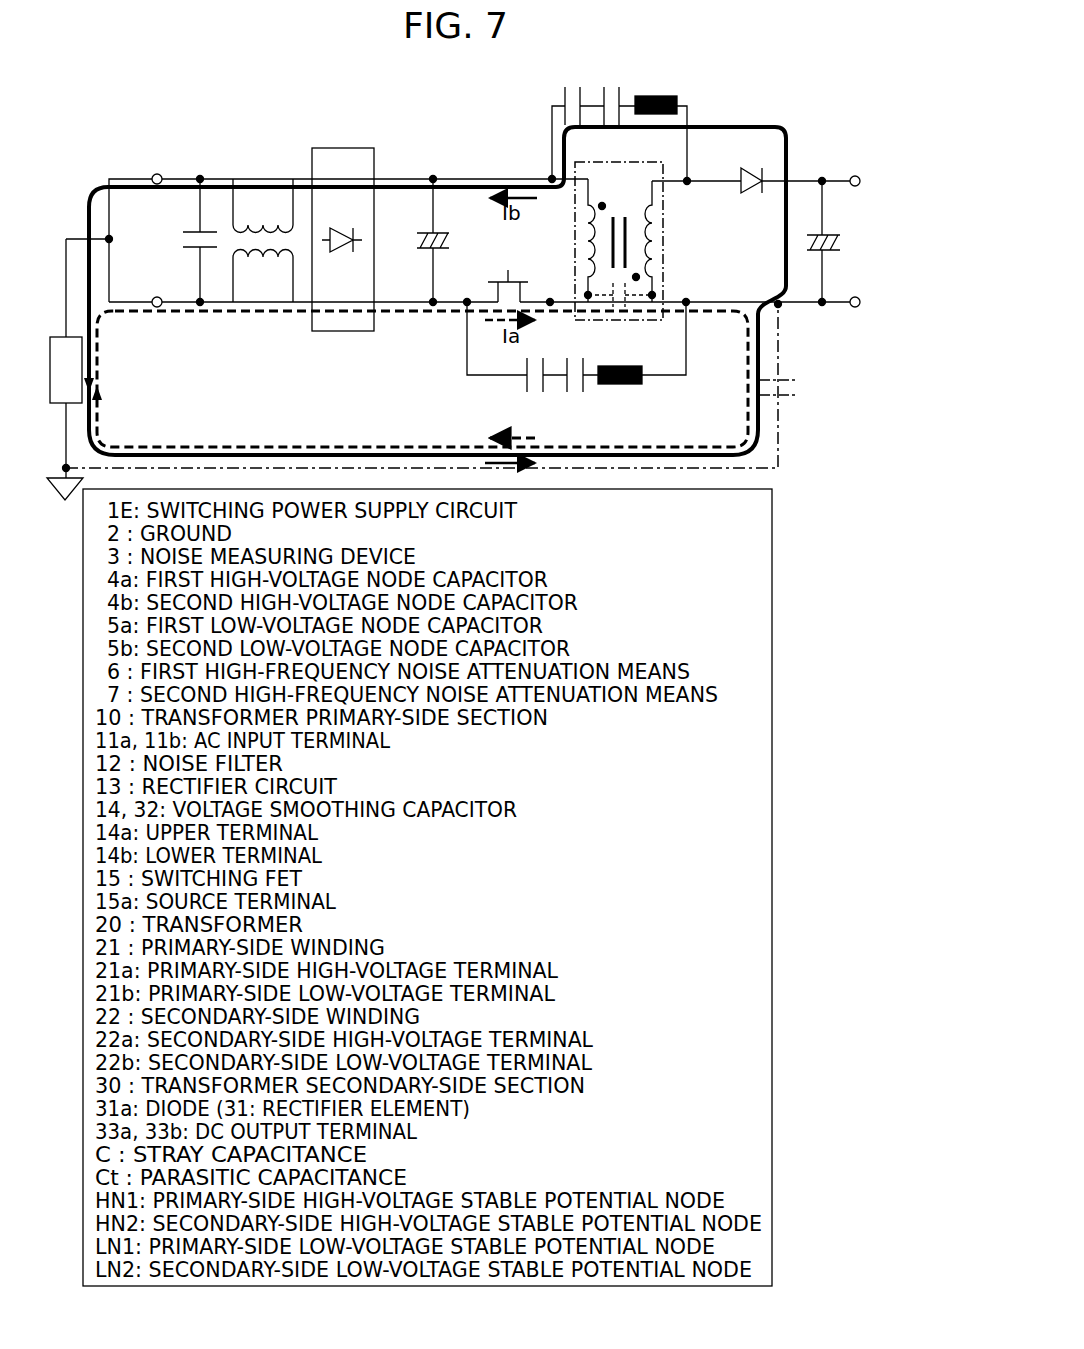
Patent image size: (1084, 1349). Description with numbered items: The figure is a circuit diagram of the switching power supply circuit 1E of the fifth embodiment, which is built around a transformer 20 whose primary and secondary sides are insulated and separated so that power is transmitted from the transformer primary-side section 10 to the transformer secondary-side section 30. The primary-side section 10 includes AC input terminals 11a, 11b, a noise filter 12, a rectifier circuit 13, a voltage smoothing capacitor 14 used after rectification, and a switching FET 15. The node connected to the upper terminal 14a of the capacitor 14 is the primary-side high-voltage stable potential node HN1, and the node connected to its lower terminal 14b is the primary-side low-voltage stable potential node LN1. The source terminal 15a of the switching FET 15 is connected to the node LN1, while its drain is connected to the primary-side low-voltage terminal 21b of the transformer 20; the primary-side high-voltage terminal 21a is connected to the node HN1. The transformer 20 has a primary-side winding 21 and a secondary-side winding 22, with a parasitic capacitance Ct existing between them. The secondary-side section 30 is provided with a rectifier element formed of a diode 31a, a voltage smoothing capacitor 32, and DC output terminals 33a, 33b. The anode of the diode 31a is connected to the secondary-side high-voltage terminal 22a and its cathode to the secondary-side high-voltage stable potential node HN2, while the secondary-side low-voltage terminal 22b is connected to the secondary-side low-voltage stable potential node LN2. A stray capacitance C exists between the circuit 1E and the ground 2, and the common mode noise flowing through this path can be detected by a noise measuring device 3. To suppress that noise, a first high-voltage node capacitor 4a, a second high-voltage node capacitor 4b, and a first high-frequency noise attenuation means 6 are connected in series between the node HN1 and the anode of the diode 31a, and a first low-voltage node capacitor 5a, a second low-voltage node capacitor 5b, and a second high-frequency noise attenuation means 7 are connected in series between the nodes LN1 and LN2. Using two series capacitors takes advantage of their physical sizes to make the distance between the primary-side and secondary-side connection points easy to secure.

The switching power supply circuit 1E is at (80, 92).
The ground 2 is at (64, 468).
The noise measuring device 3 is at (58, 338).
The first high-voltage node capacitor 4a is at (586, 90).
The second high-voltage node capacitor 4b is at (625, 90).
The first low-voltage node capacitor 5a is at (545, 380).
The second low-voltage node capacitor 5b is at (585, 380).
The first high-frequency noise attenuation means 6 is at (662, 96).
The second high-frequency noise attenuation means 7 is at (628, 384).
The transformer primary-side section 10 is at (410, 105).
The AC input terminal 11a is at (158, 173).
The AC input terminal 11b is at (157, 296).
The noise filter 12 is at (293, 170).
The rectifier circuit 13 is at (343, 148).
The voltage smoothing capacitor for a high-voltage node 14 is at (438, 233).
The upper terminal 14a is at (432, 177).
The lower terminal 14b is at (433, 305).
The switching FET 15 is at (499, 280).
The source terminal 15a is at (466, 300).
The transformer 20 is at (623, 241).
The primary-side winding 21 is at (588, 241).
The primary-side high-voltage terminal 21a is at (551, 178).
The primary-side low-voltage terminal 21b is at (549, 300).
The secondary-side winding 22 is at (652, 241).
The secondary-side high-voltage terminal 22a is at (688, 179).
The secondary-side low-voltage terminal 22b is at (685, 300).
The transformer secondary-side section 30 is at (815, 107).
The diode 31a is at (752, 168).
The voltage smoothing capacitor 32 is at (826, 235).
The DC output terminal 33a is at (855, 175).
The DC output terminal 33b is at (855, 297).
The stray capacitance C is at (790, 380).
The parasitic capacitance Ct is at (628, 305).
The primary-side high-voltage stable potential node HN1 is at (395, 177).
The secondary-side high-voltage stable potential node HN2 is at (809, 179).
The primary-side low-voltage stable potential node LN1 is at (396, 305).
The secondary-side low-voltage stable potential node LN2 is at (808, 306).